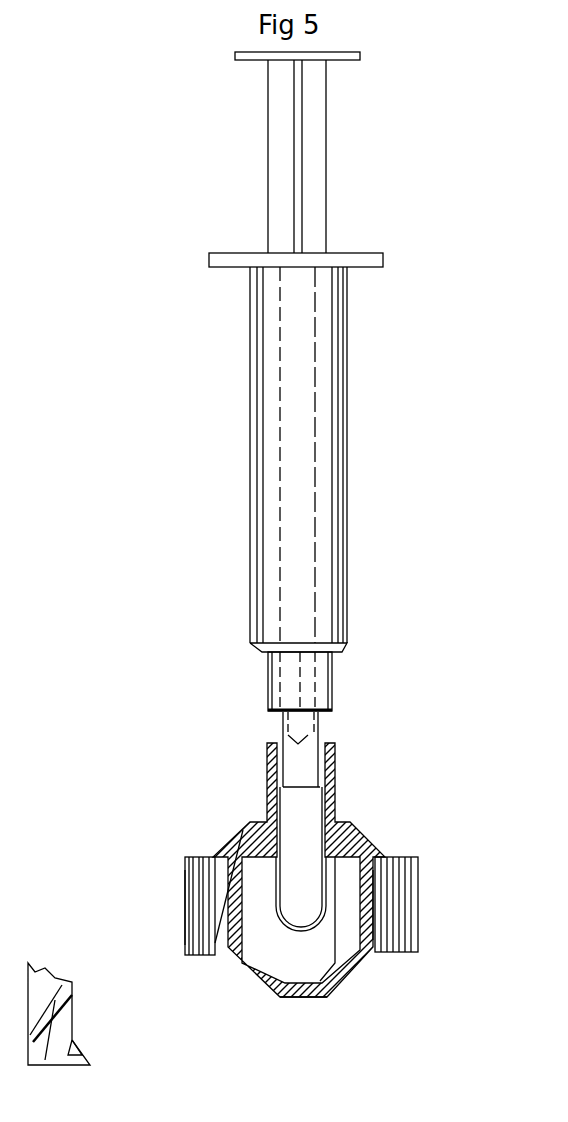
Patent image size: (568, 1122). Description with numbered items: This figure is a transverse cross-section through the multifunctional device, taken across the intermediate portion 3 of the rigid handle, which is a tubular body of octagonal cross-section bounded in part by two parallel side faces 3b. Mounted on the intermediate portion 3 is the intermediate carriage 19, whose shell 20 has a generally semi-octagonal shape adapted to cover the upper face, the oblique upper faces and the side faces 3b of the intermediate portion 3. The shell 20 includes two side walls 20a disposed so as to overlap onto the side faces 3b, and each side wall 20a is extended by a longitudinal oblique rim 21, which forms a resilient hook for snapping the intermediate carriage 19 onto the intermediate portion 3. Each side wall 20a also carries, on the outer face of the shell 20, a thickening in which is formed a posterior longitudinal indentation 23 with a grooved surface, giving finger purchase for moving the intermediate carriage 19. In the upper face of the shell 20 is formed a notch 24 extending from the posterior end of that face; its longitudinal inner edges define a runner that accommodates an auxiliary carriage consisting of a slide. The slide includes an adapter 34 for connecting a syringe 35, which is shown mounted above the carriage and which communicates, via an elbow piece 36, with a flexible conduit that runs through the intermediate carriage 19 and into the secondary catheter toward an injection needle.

The syringe 35 is at (325, 423).
The elbow piece 36 is at (320, 787).
The adapter 34 is at (267, 775).
The shell 20 is at (368, 843).
The side wall 20a is at (380, 889).
The posterior longitudinal indentation 23 is at (185, 897).
The notch 24 is at (243, 830).
The side face 3b is at (368, 920).
The intermediate portion 3 is at (357, 963).
The intermediate carriage 19 is at (397, 800).
The longitudinal oblique rim 21 is at (240, 972).